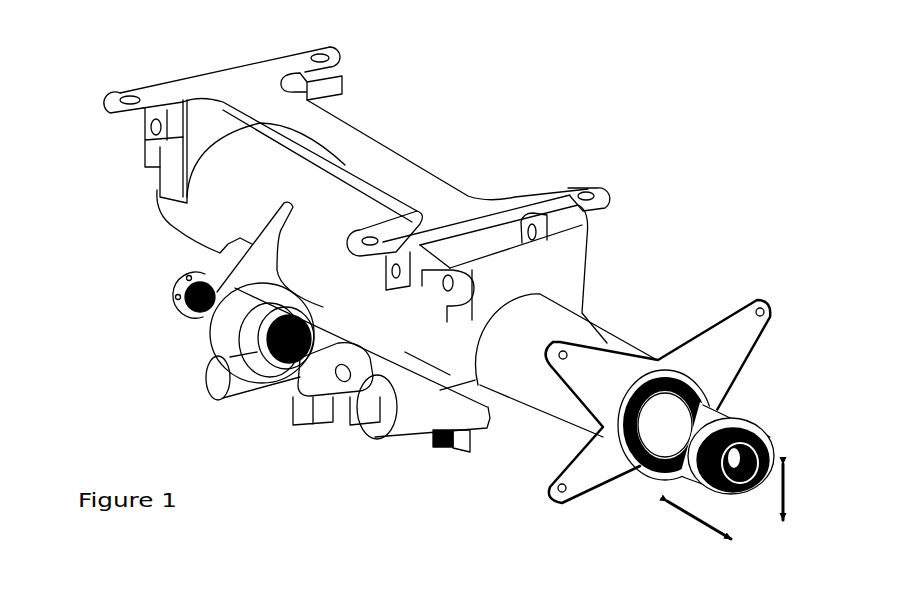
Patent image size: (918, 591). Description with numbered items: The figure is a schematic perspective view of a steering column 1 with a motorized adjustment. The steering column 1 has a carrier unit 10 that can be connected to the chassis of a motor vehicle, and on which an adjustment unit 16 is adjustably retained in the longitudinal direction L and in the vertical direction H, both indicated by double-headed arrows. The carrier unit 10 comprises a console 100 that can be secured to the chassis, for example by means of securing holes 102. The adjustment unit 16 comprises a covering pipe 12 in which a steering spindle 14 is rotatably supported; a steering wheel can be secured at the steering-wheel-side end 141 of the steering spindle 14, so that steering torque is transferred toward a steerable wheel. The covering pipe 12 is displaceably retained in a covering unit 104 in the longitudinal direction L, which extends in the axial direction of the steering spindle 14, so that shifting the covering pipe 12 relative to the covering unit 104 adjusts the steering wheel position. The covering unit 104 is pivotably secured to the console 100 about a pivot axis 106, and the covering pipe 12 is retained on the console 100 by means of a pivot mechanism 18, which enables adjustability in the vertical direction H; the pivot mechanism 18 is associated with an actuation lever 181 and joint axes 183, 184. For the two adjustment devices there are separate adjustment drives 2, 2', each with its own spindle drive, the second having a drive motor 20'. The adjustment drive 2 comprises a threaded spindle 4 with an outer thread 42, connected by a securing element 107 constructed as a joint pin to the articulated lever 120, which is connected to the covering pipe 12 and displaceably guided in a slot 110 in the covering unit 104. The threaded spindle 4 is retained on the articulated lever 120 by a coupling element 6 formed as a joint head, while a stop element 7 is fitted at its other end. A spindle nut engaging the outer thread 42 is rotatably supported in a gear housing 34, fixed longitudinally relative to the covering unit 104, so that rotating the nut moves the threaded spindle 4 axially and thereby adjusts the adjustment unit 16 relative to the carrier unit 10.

The steering column 1 is at (583, 107).
The carrier unit 10 is at (434, 130).
The console 100 is at (320, 128).
The securing holes 102 is at (122, 95).
The covering unit 104 is at (213, 203).
The pivot axis 106 is at (338, 88).
The securing element 107 is at (342, 381).
The slot 110 is at (443, 385).
The covering pipe 12 is at (566, 322).
The articulated lever 120 is at (373, 357).
The steering spindle 14 is at (705, 412).
The steering-wheel-side end 141 is at (752, 433).
The adjustment unit 16 is at (672, 290).
The pivot mechanism 18 is at (600, 240).
The actuation lever 181 is at (598, 235).
The joint axis 183 is at (600, 258).
The joint axis 184 is at (350, 273).
The adjustment drive 2 is at (358, 373).
The adjustment drive 2' is at (408, 490).
The drive motor 20' is at (451, 486).
The gear housing 34 is at (237, 328).
The threaded spindle 4 is at (186, 311).
The outer thread 42 is at (240, 360).
The coupling element 6 is at (318, 367).
The stop element 7 is at (183, 288).
The vertical direction H is at (793, 481).
The longitudinal direction L is at (695, 520).